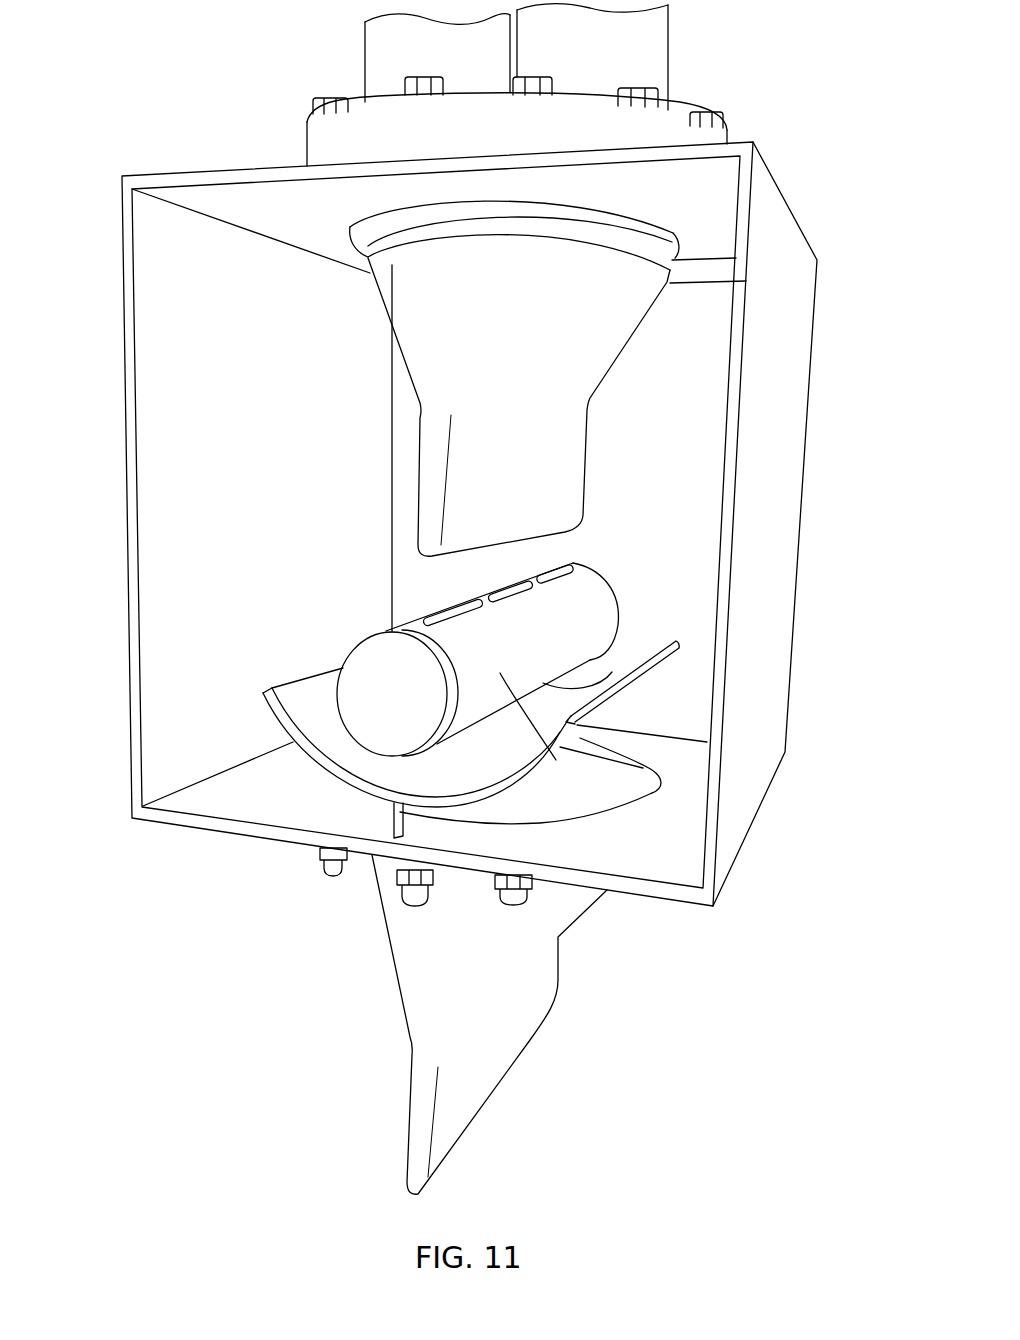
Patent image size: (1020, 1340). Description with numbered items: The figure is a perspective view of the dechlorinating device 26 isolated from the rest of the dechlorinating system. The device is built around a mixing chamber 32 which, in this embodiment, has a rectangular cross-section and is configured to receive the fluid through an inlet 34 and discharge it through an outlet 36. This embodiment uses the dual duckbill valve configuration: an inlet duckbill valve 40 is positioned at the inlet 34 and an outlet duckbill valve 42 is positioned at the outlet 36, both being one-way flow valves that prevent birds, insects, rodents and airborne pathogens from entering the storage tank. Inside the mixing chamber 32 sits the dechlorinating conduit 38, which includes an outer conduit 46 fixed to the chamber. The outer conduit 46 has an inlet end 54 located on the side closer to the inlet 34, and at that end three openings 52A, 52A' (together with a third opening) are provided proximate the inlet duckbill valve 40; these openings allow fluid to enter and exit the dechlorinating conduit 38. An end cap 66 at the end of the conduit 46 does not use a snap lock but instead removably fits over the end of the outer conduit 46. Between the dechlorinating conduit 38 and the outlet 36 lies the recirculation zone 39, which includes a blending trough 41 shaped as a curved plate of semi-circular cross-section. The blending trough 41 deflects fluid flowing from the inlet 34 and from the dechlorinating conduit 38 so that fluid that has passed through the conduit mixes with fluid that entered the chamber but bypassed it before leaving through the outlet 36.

The dechlorinating device 26 is at (94, 791).
The mixing chamber 32 is at (775, 415).
The inlet 34 is at (578, 213).
The outlet 36 is at (540, 807).
The dechlorinating conduit 38 is at (652, 770).
The recirculation zone 39 is at (628, 648).
The inlet duckbill valve 40 is at (560, 468).
The blending trough 41 is at (613, 700).
The outlet duckbill valve 42 is at (500, 1022).
The outer conduit 46 is at (403, 628).
The opening 52A is at (268, 558).
The opening 52A' is at (293, 493).
The inlet end 54 is at (620, 603).
The end cap 66 is at (372, 700).